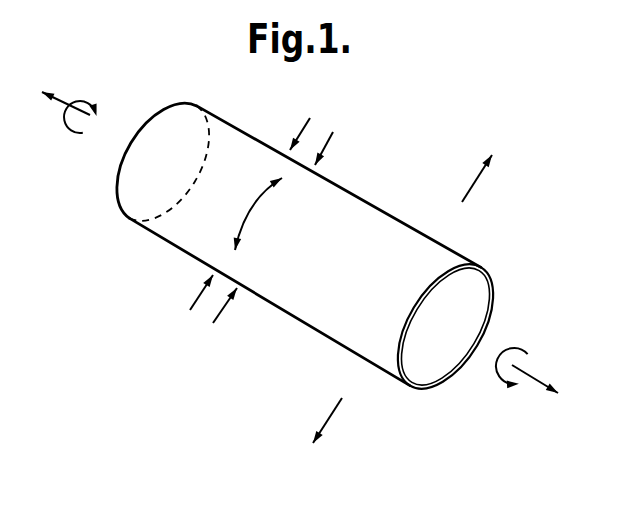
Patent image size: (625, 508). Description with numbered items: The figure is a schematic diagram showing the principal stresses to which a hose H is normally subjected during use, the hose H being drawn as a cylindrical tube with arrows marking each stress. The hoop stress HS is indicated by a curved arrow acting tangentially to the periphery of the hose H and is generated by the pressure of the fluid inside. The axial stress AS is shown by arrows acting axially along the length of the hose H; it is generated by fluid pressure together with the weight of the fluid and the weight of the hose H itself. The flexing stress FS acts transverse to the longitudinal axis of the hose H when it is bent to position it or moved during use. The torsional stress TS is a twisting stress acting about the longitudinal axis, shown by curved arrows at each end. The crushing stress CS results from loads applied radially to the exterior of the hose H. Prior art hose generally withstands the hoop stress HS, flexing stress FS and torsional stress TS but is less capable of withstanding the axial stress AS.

The hose H is at (364, 209).
The axial stress AS is at (321, 220).
The torsional stress TS is at (313, 234).
The crushing stress CS is at (238, 206).
The hoop stress HS is at (244, 214).
The flexing stress FS is at (422, 319).